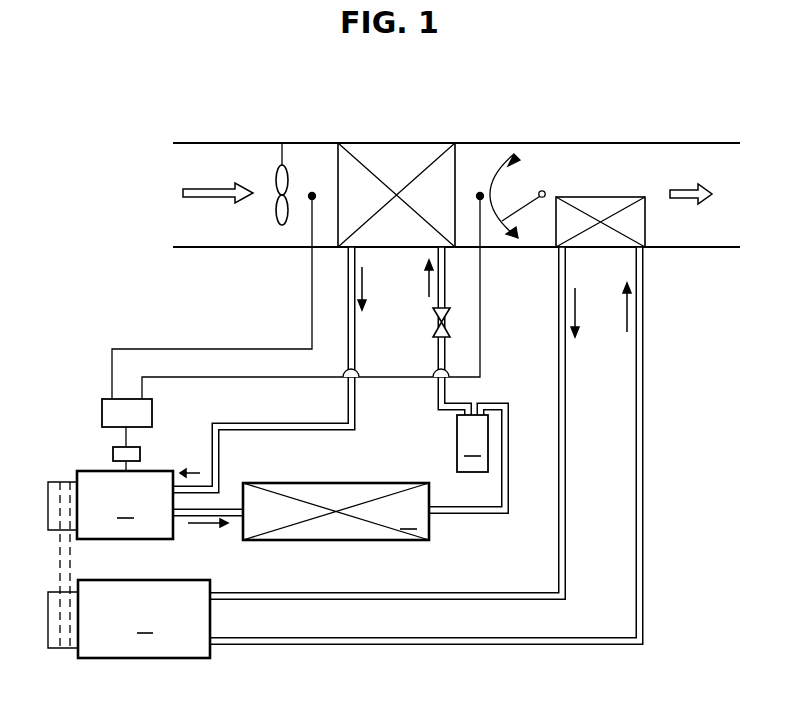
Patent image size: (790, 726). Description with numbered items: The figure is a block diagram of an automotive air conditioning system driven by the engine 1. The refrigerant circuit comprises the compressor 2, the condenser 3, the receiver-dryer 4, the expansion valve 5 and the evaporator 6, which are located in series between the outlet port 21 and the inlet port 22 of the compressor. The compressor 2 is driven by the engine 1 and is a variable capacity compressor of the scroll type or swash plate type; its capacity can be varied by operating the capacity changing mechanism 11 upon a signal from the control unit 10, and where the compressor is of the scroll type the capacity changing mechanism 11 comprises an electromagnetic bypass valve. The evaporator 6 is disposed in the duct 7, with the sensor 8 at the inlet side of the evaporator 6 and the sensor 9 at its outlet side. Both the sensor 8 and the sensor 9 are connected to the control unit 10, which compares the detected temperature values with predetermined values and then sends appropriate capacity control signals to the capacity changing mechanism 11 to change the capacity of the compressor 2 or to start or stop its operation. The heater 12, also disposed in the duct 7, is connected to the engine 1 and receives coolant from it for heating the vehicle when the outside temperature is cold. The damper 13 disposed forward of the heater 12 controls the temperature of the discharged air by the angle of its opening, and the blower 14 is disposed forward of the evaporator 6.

The engine 1 is at (129, 619).
The compressor 2 is at (110, 505).
The condenser 3 is at (336, 511).
The receiver-dryer 4 is at (472, 443).
The expansion valve 5 is at (438, 322).
The evaporator 6 is at (395, 160).
The duct 7 is at (482, 143).
The sensor 8 is at (312, 194).
The sensor 9 is at (480, 194).
The control unit 10 is at (102, 405).
The capacity changing mechanism 11 is at (113, 451).
The heater 12 is at (607, 197).
The damper 13 is at (538, 194).
The blower 14 is at (282, 143).
The outlet port 21 is at (185, 517).
The inlet port 22 is at (212, 489).